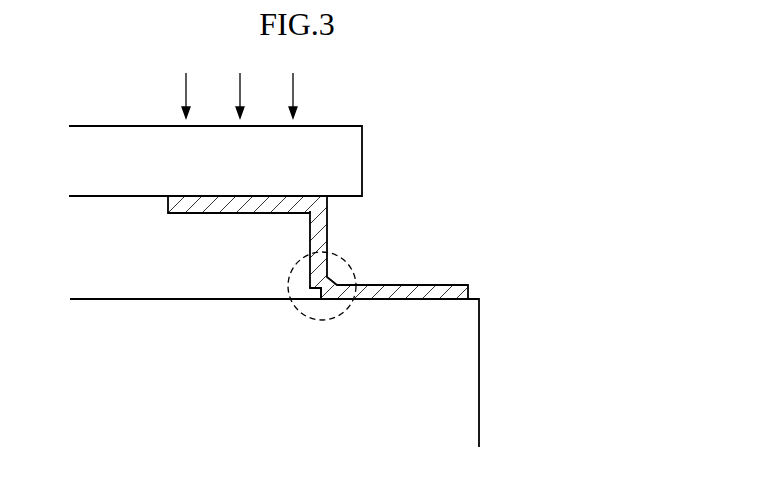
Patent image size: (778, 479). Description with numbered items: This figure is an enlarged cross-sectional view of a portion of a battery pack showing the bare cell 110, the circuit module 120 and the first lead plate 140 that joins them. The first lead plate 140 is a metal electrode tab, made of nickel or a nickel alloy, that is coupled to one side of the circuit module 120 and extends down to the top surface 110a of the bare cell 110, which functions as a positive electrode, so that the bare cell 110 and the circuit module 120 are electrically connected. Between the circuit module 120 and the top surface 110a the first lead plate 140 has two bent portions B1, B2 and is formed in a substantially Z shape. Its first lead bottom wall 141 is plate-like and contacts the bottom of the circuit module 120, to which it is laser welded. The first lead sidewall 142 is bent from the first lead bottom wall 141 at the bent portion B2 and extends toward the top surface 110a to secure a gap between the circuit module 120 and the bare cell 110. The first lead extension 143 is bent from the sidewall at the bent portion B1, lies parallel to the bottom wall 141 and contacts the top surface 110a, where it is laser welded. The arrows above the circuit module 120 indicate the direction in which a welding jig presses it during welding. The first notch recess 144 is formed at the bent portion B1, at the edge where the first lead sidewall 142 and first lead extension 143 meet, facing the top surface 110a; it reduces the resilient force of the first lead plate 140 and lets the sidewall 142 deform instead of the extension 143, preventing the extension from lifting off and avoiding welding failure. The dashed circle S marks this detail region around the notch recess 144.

The bare cell 110 is at (293, 343).
The top surface of bare cell 110a is at (92, 298).
The circuit module 120 is at (357, 136).
The first lead plate 140 is at (312, 275).
The first lead bottom wall 141 is at (192, 214).
The first lead sidewall 142 is at (308, 256).
The first lead extension 143 is at (443, 285).
The first notch recess 144 is at (312, 303).
The bent portion B1 is at (300, 306).
The bent portion B2 is at (294, 228).
The detail region S is at (348, 265).